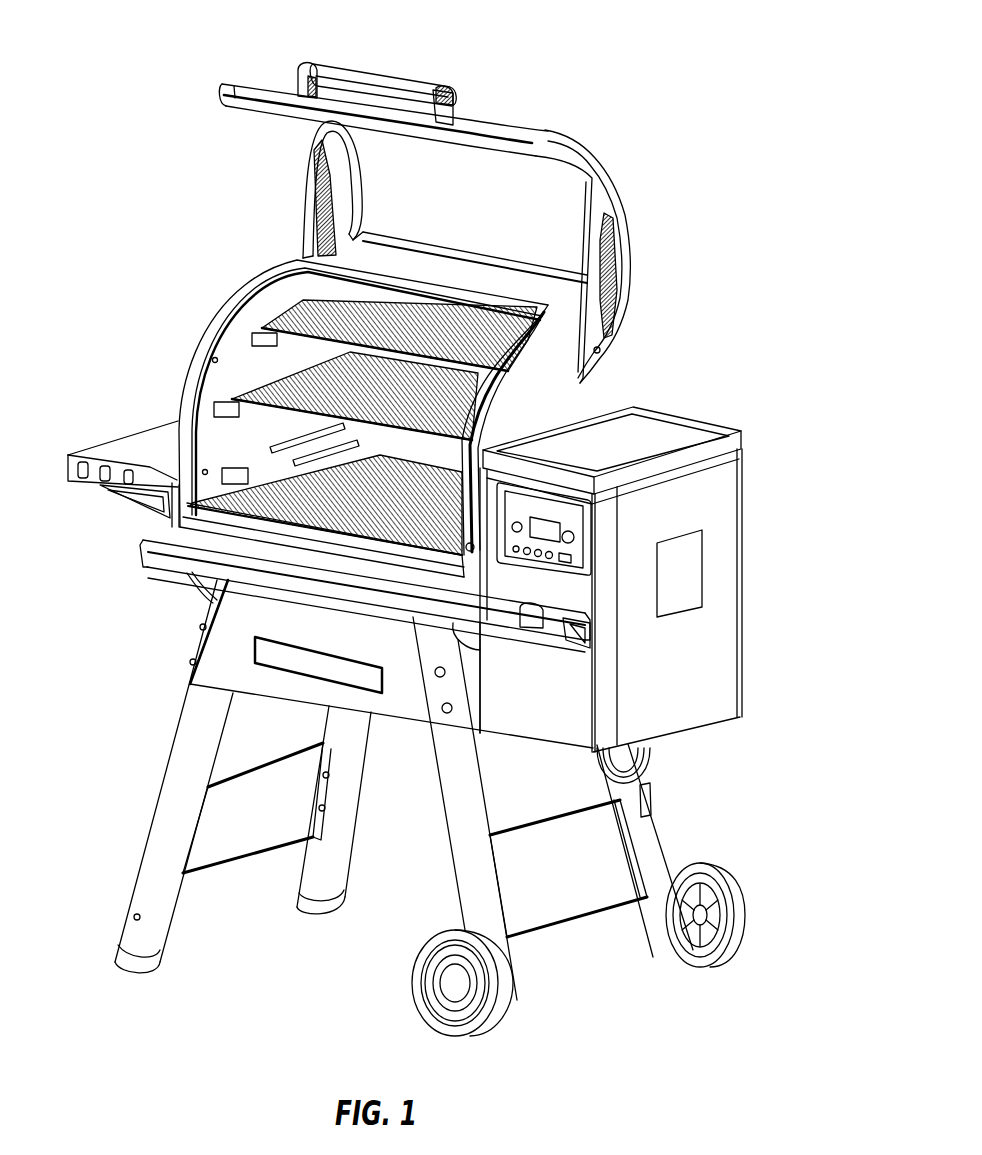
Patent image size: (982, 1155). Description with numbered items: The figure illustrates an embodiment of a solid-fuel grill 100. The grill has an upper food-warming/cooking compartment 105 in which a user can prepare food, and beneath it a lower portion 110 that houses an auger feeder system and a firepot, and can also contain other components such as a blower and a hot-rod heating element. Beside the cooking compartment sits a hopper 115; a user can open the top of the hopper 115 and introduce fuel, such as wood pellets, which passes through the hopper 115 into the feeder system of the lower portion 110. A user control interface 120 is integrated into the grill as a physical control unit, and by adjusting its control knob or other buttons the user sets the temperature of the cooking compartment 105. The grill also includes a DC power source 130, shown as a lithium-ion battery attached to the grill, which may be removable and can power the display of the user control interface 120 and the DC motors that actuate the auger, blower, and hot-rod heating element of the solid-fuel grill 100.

The solid-fuel grill 100 is at (562, 107).
The food-warming/cooking compartment 105 is at (164, 348).
The lower portion 110 is at (551, 712).
The hopper 115 is at (703, 687).
The user control interface 120 is at (547, 527).
The DC power source 130 is at (675, 577).